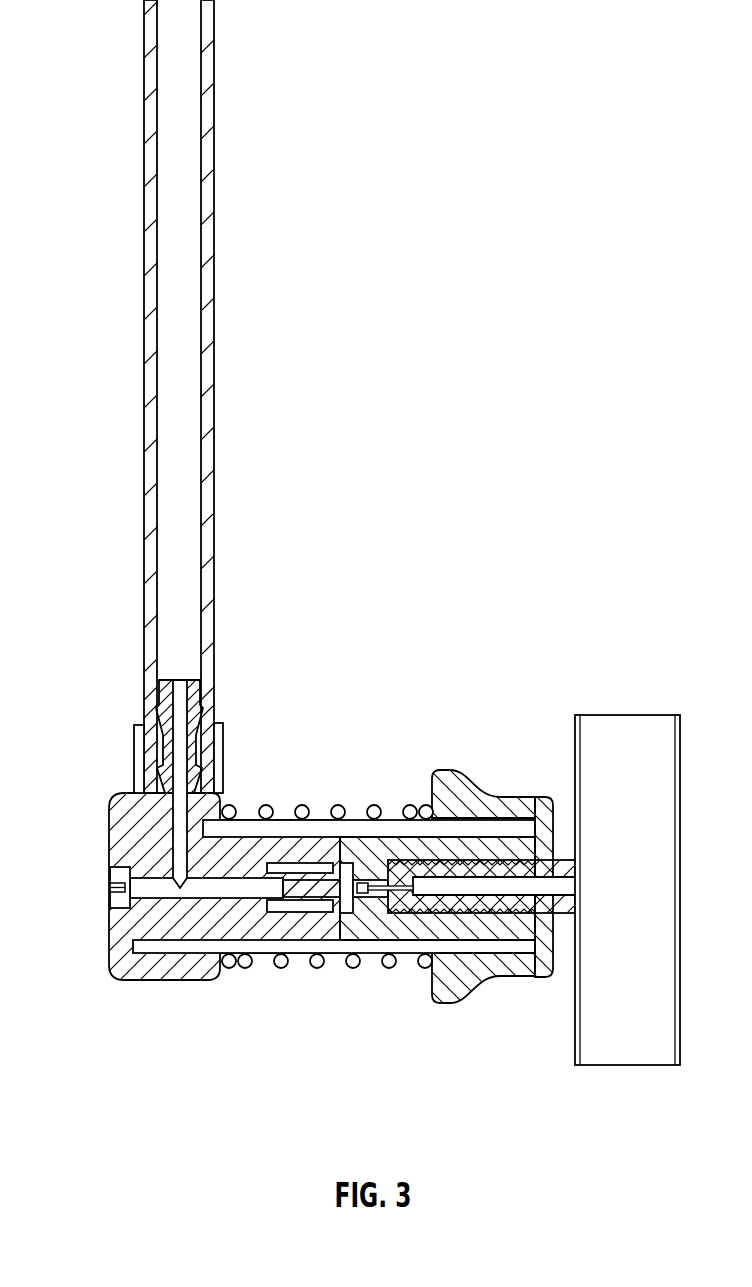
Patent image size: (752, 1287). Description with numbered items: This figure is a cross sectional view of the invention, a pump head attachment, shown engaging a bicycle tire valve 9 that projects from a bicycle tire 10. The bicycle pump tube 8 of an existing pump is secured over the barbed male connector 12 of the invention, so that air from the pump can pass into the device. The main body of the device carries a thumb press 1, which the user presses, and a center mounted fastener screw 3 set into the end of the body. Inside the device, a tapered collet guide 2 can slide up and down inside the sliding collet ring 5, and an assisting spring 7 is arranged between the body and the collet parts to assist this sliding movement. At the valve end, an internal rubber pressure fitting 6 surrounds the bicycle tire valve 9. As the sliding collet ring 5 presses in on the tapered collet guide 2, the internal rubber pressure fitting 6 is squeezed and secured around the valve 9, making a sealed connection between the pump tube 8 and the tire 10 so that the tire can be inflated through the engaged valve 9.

The thumb press 1 is at (180, 970).
The tapered collet guide 2 is at (383, 927).
The center mounted fastener screw 3 is at (104, 886).
The sliding collet ring 5 is at (467, 814).
The internal rubber pressure fitting 6 is at (547, 962).
The assisting spring 7 is at (339, 800).
The bicycle pump tube 8 is at (218, 247).
The bicycle tire valve 9 is at (566, 860).
The bicycle tire 10 is at (614, 710).
The barbed male connector 12 is at (178, 723).